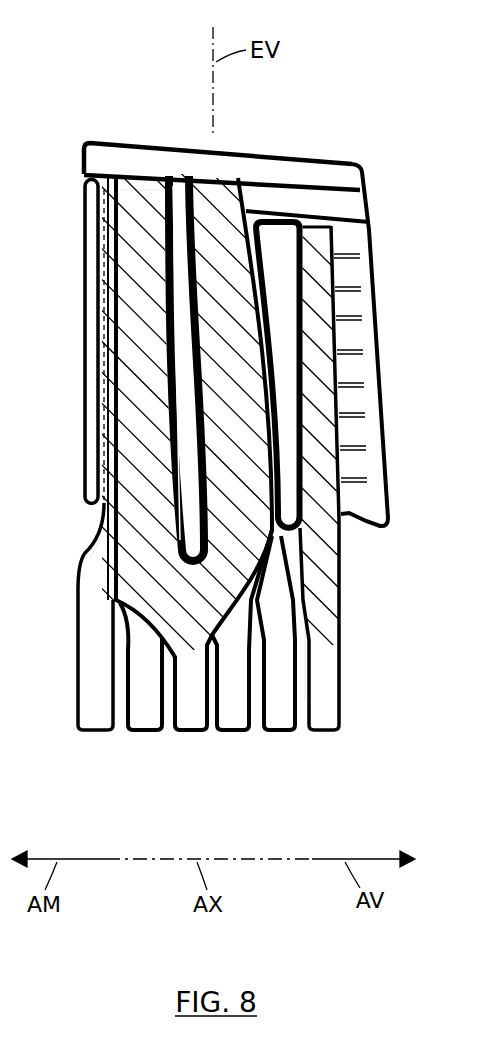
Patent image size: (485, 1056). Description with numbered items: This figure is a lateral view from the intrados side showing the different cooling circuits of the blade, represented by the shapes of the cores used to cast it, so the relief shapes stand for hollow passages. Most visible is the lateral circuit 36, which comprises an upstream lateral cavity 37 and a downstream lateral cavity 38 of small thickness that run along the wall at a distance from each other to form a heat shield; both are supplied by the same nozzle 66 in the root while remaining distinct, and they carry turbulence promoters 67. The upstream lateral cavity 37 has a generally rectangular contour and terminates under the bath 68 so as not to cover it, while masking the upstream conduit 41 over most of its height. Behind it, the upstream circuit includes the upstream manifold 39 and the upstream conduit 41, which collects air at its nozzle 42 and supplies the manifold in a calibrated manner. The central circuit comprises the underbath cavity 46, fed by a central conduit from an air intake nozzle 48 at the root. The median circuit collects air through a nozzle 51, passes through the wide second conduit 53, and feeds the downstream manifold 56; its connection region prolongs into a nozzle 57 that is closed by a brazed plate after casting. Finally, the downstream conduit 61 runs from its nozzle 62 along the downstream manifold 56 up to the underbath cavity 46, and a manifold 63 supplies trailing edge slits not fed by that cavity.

The lateral circuit 36 is at (120, 602).
The upstream lateral cavity 37 is at (148, 200).
The downstream lateral cavity 38 is at (219, 198).
The upstream manifold 39 is at (92, 302).
The upstream conduit 41 is at (96, 332).
The nozzle 42 is at (92, 722).
The underbath cavity 46 is at (303, 193).
The air intake nozzle 48 is at (232, 722).
The nozzle 51 is at (145, 722).
The second conduit 53 is at (160, 232).
The downstream manifold 56 is at (282, 265).
The nozzle 57 is at (278, 720).
The downstream conduit 61 is at (327, 363).
The nozzle 62 is at (320, 717).
The manifold 63 is at (361, 337).
The nozzle 66 is at (190, 722).
The turbulence promoters 67 is at (148, 595).
The bath 68 is at (263, 165).